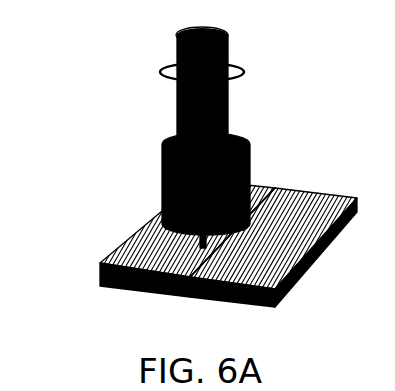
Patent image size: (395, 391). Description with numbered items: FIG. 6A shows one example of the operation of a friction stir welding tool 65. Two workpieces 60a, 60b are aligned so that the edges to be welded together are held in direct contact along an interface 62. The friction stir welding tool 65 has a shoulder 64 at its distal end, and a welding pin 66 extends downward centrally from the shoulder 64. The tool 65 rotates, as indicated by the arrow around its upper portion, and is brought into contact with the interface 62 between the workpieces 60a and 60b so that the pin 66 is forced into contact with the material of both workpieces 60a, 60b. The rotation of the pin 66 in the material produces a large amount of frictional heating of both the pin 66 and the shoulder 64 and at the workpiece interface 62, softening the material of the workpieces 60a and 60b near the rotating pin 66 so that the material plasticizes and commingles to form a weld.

The workpiece 60a is at (113, 287).
The workpiece 60b is at (297, 283).
The interface 62 is at (283, 172).
The shoulder 64 is at (186, 229).
The friction stir welding tool 65 is at (187, 110).
The welding pin 66 is at (185, 246).